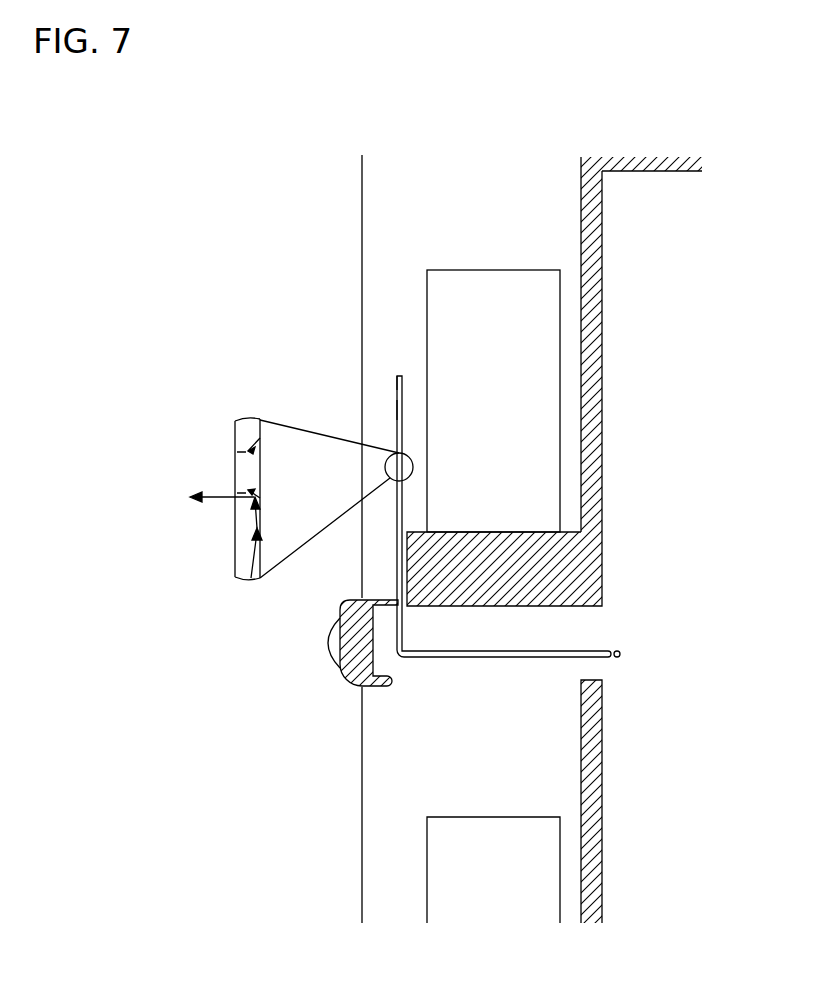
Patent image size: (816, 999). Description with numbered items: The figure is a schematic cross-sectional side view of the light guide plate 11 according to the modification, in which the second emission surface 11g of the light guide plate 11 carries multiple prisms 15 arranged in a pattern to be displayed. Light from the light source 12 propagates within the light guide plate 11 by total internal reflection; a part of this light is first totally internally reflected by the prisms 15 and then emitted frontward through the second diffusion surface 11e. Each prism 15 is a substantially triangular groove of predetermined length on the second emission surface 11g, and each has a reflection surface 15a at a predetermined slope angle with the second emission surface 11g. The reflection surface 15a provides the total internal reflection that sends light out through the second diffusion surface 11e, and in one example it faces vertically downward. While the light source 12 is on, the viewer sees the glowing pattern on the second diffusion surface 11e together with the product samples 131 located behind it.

The light guide plate 11 is at (582, 650).
The second diffusion surface 11e is at (395, 402).
The second emission surface 11g is at (400, 374).
The light source 12 is at (622, 655).
The product samples 131 is at (490, 298).
The prism 15 is at (257, 491).
The reflection surface 15a is at (237, 493).